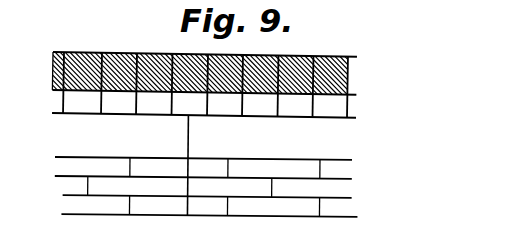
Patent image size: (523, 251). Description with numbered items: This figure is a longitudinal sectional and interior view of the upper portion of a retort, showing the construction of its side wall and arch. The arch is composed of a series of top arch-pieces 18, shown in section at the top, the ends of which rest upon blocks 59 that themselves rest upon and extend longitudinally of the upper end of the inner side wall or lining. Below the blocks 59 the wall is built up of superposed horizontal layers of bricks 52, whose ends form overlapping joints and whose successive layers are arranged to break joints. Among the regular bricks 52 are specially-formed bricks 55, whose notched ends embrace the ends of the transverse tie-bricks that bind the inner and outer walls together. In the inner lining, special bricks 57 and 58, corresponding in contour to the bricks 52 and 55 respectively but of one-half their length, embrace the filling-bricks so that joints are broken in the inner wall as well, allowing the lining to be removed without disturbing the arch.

The top arch-pieces 18 is at (348, 78).
The blocks 59 is at (203, 153).
The special brick 58 is at (147, 163).
The special brick 57 is at (205, 163).
The specially-formed brick 55 is at (133, 185).
The bricks 52 is at (247, 188).